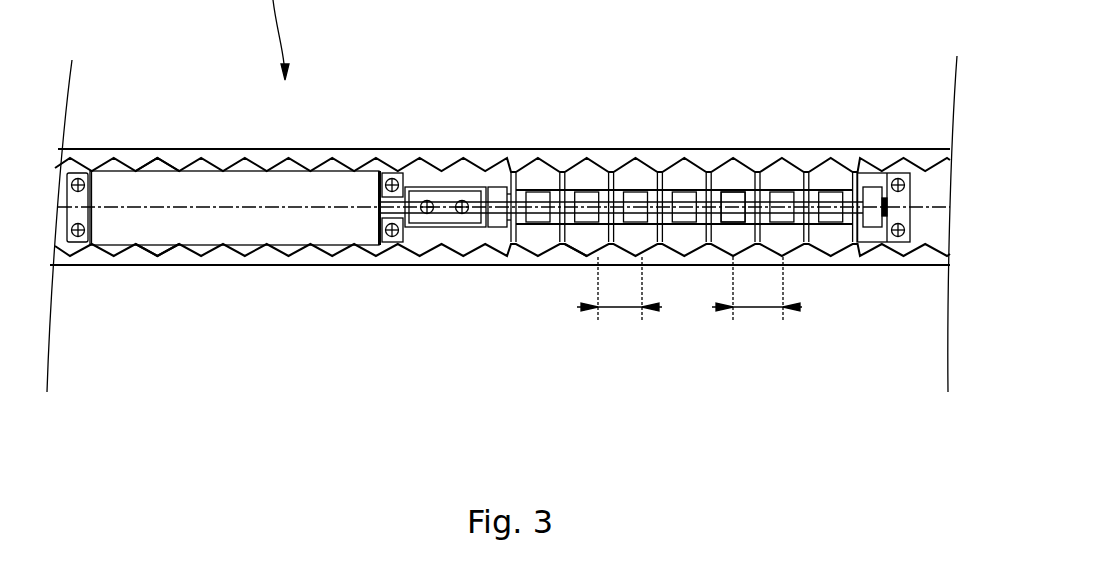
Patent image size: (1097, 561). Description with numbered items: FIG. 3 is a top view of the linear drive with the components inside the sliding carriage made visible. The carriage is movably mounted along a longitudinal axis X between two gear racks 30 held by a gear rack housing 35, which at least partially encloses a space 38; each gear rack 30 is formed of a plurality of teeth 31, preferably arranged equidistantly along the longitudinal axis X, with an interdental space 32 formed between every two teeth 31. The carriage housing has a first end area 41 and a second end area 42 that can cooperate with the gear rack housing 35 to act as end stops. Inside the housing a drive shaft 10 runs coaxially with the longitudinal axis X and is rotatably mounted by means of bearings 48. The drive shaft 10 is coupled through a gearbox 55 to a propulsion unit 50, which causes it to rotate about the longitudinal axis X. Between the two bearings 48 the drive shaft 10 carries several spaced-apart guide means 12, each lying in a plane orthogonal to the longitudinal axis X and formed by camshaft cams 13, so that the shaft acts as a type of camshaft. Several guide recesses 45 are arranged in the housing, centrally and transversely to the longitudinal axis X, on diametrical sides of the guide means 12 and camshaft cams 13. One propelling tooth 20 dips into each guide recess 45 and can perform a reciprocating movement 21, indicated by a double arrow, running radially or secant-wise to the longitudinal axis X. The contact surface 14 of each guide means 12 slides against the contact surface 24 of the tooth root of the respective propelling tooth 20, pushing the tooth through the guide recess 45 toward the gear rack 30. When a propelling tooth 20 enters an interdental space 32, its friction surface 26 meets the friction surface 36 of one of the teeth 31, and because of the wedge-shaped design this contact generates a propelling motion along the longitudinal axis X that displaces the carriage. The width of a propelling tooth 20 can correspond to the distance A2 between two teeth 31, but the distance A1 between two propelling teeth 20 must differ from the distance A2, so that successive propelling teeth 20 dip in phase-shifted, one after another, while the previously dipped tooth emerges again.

The drive shaft 10 is at (684, 136).
The guide means 12 is at (732, 205).
The camshaft cams 13 is at (733, 207).
The contact surface 14 is at (781, 192).
The propelling tooth 20 is at (521, 173).
The reciprocating movement 21 is at (538, 252).
The contact surface 24 is at (831, 218).
The friction surface 26 is at (576, 249).
The gear rack 30 is at (157, 253).
The teeth 31 is at (273, 258).
The interdental space 32 is at (382, 253).
The gear rack housing 35 is at (518, 156).
The friction surface 36 is at (588, 178).
The space 38 is at (938, 218).
The first end area 41 is at (60, 172).
The second end area 42 is at (912, 199).
The guide recess 45 is at (669, 185).
The bearing 48 is at (500, 218).
The propulsion unit 50 is at (190, 172).
The gearbox 55 is at (420, 193).
The longitudinal axis X is at (317, 205).
The distance between two propelling teeth A1 is at (612, 307).
The distance between two teeth A2 is at (747, 307).